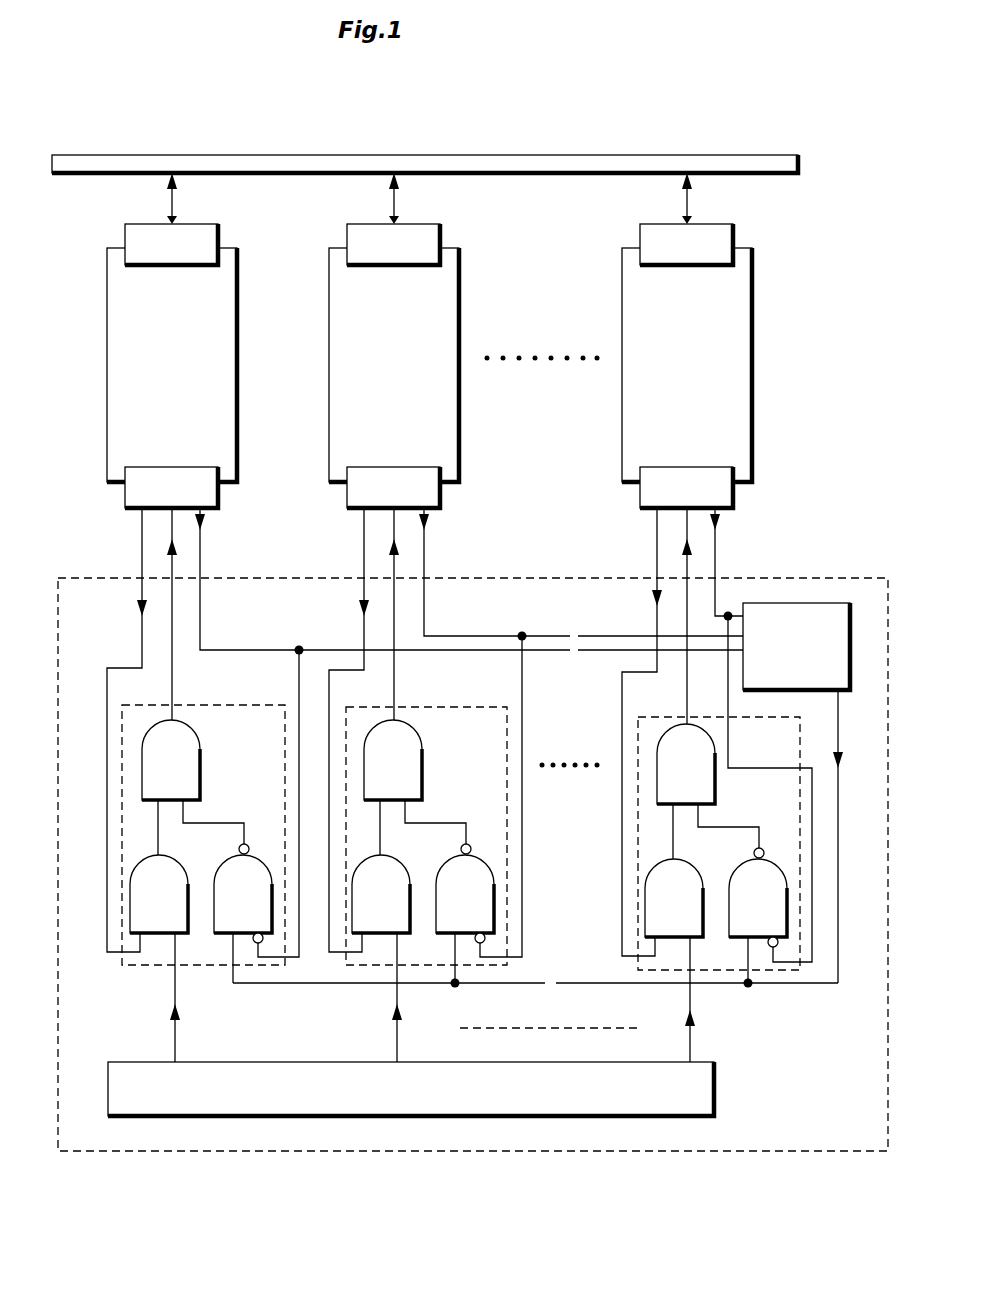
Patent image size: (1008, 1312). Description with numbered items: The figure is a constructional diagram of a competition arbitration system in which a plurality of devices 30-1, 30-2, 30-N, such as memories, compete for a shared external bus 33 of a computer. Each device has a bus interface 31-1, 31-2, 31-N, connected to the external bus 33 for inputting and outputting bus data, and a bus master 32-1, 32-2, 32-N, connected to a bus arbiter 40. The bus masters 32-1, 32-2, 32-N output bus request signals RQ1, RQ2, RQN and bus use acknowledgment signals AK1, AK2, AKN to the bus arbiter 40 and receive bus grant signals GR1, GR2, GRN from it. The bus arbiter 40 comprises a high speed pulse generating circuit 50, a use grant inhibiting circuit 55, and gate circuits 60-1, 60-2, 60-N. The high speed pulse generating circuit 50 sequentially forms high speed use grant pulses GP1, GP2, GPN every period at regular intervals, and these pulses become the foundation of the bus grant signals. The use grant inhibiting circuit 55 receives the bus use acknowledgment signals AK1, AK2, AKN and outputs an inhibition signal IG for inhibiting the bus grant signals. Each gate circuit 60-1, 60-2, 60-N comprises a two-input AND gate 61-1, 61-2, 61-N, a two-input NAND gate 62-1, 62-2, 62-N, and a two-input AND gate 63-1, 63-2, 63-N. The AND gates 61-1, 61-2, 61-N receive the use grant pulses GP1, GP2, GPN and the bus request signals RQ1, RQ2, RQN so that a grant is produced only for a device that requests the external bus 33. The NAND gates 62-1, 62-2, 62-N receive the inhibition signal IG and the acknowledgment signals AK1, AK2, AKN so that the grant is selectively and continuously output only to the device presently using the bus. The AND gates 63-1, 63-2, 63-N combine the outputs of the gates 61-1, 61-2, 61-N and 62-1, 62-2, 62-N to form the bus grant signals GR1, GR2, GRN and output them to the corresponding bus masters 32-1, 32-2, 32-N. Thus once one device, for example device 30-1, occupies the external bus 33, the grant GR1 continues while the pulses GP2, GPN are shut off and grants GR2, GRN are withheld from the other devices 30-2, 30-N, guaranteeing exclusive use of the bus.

The external bus 33 is at (205, 153).
The bus interface 31-1 is at (220, 243).
The bus interface 31-2 is at (442, 243).
The bus interface 31-N is at (735, 243).
The device 30-1 is at (237, 332).
The device 30-2 is at (459, 332).
The device 30-N is at (752, 332).
The bus master 32-1 is at (220, 490).
The bus master 32-2 is at (442, 490).
The bus master 32-N is at (735, 490).
The bus arbiter 40 is at (427, 1153).
The high speed pulse generating circuit 50 is at (714, 1100).
The use grant inhibiting circuit 55 is at (828, 604).
The gate circuit 60-1 is at (215, 705).
The gate circuit 60-2 is at (437, 705).
The gate circuit 60-N is at (805, 745).
The 2-input AND gate 61-1 is at (190, 885).
The 2-input AND gate 61-2 is at (412, 885).
The 2-input AND gate 61-N is at (705, 889).
The 2-input NAND gate 62-1 is at (250, 843).
The 2-input NAND gate 62-2 is at (472, 843).
The 2-input NAND gate 62-N is at (765, 848).
The 2-input AND gate 63-1 is at (200, 748).
The 2-input AND gate 63-2 is at (422, 748).
The 2-input AND gate 63-N is at (715, 775).
The bus request signal RQ1 is at (142, 540).
The bus request signal RQ2 is at (364, 540).
The bus request signal RQN is at (657, 542).
The bus use acknowledgment signal AK1 is at (200, 556).
The bus use acknowledgment signal AK2 is at (424, 556).
The bus use acknowledgment signal AKN is at (715, 556).
The bus grant signal GR1 is at (172, 684).
The bus grant signal GR2 is at (394, 684).
The bus grant signal GRN is at (687, 666).
The use grant pulse GP1 is at (175, 1045).
The use grant pulse GP2 is at (397, 1045).
The use grant pulse GPN is at (690, 1055).
The inhibition signal IG is at (495, 985).